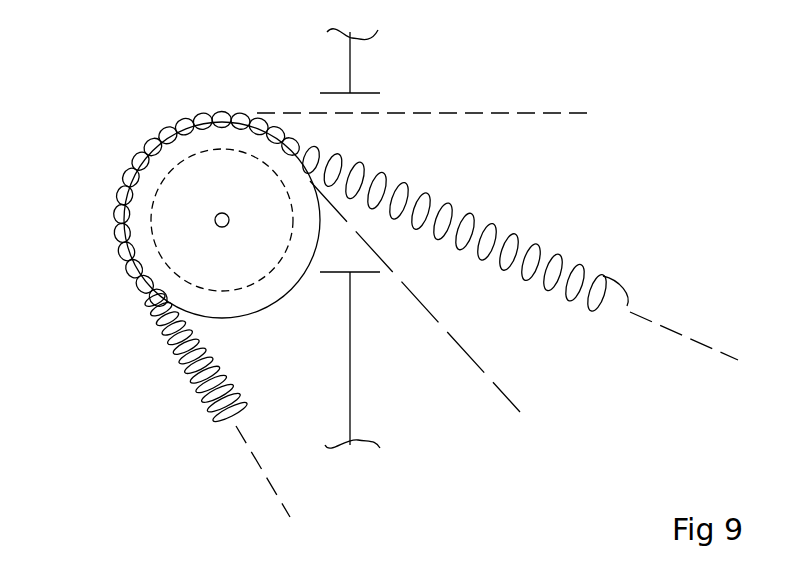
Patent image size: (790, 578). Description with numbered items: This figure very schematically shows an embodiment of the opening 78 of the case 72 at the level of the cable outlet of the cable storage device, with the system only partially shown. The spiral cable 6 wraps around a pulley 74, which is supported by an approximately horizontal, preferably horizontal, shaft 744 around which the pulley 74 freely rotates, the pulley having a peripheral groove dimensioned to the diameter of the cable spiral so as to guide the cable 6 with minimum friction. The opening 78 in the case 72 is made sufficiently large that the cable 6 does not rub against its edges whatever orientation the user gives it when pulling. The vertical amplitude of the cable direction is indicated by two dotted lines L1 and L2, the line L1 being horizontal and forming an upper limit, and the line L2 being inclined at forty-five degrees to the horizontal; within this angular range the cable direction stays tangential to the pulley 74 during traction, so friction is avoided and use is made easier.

The cable 6 is at (187, 373).
The case 72 is at (348, 62).
The pulley 74 is at (172, 232).
The shaft 744 is at (223, 213).
The opening 78 is at (392, 100).
The dotted line L1 is at (555, 113).
The dotted line L2 is at (473, 358).